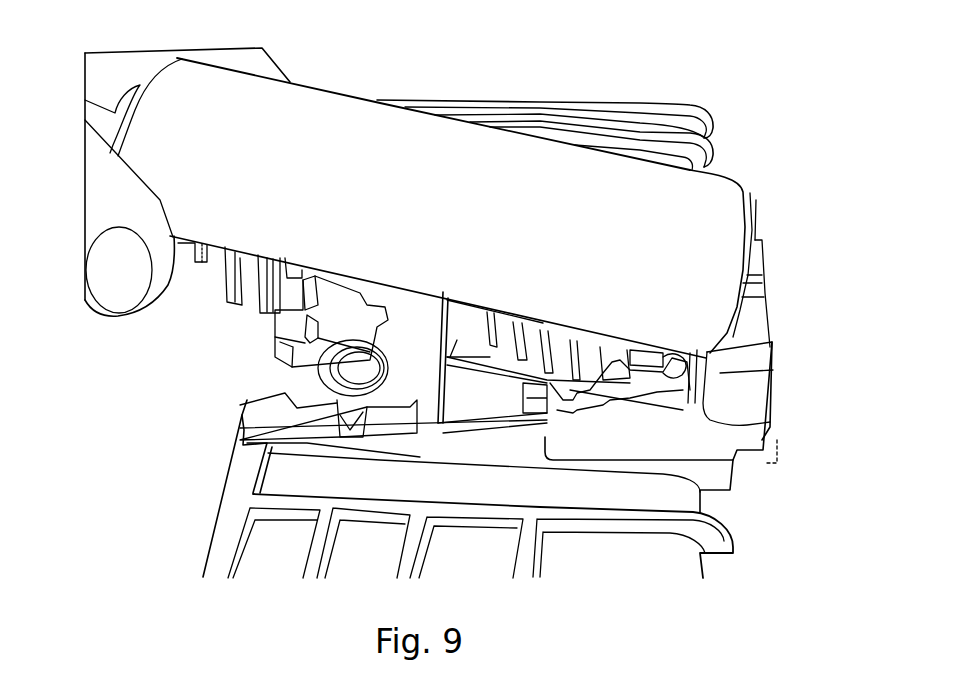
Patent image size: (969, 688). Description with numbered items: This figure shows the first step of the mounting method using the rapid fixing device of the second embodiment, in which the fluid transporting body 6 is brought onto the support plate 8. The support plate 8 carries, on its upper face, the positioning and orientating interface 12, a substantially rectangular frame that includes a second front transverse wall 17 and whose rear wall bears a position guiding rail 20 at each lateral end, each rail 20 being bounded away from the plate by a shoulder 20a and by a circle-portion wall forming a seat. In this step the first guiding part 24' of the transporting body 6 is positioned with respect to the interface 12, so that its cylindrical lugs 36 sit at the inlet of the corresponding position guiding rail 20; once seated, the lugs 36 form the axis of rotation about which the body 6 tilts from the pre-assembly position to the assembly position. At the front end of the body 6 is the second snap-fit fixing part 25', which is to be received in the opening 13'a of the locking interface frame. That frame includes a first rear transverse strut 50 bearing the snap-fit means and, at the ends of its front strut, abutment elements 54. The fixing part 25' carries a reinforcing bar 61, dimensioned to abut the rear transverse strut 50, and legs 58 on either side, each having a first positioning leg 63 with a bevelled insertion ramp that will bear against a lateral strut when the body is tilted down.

The fluid transporting body 6 is at (383, 126).
The support plate 8 is at (605, 553).
The positioning and orientating interface 12 is at (663, 460).
The opening 13'a is at (250, 399).
The second front transverse wall 17 is at (527, 400).
The position guiding rail 20 is at (770, 417).
The shoulder 20a is at (760, 355).
The first guiding part 24' is at (622, 394).
The second snap-fit fixing part 25' is at (110, 289).
The cylindrical lug 36 is at (735, 320).
The first rear transverse strut 50 is at (406, 386).
The abutment element 54 is at (266, 349).
The leg 58 is at (176, 321).
The reinforcing bar 61 is at (305, 254).
The first positioning leg 63 is at (248, 308).